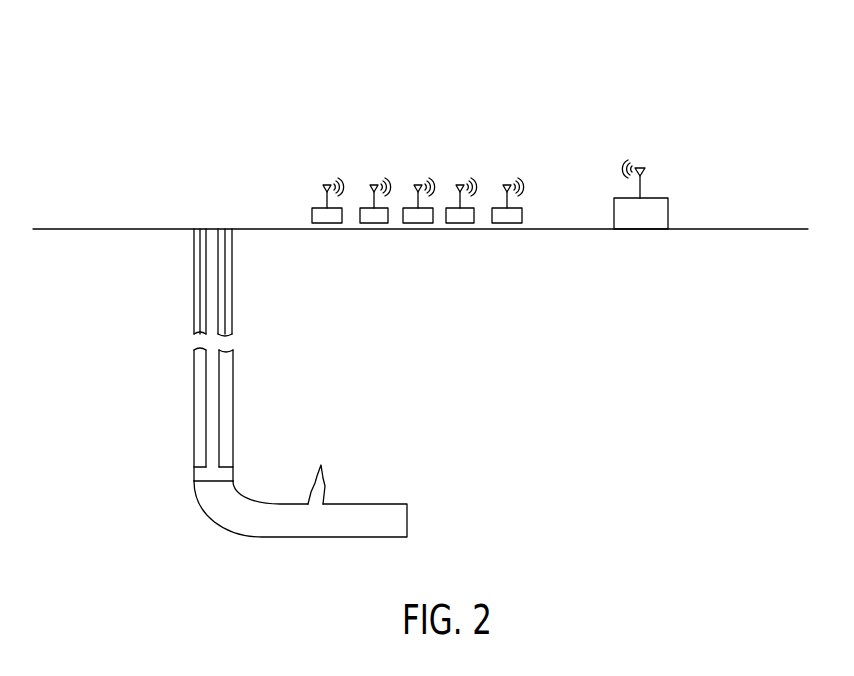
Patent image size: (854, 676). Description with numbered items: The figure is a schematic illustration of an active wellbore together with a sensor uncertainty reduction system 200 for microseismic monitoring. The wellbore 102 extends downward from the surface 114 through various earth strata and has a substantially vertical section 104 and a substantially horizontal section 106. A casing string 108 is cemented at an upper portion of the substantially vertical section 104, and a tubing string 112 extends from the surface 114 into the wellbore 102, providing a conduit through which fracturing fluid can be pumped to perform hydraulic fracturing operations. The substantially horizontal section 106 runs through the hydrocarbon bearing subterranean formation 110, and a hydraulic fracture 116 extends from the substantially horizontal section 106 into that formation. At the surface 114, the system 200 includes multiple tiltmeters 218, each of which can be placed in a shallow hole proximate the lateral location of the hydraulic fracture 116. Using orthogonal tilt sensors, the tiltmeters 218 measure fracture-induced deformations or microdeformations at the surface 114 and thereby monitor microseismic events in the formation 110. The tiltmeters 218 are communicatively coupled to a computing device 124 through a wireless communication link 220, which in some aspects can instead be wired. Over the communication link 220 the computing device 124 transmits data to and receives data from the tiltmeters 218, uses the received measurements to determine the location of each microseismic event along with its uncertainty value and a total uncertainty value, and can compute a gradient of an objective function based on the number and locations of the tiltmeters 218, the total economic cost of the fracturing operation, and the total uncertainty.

The sensor uncertainty reduction system 200 is at (603, 78).
The surface 114 is at (117, 229).
The wellbore 102 is at (194, 290).
The casing string 108 is at (233, 252).
The tubing string 112 is at (214, 297).
The substantially vertical section 104 is at (194, 405).
The substantially horizontal section 106 is at (393, 504).
The hydraulic fracture 116 is at (318, 466).
The hydrocarbon bearing subterranean formation 110 is at (281, 404).
The computing device 124 is at (627, 226).
The tiltmeters 218 is at (318, 208).
The wireless communication link 220 is at (324, 185).